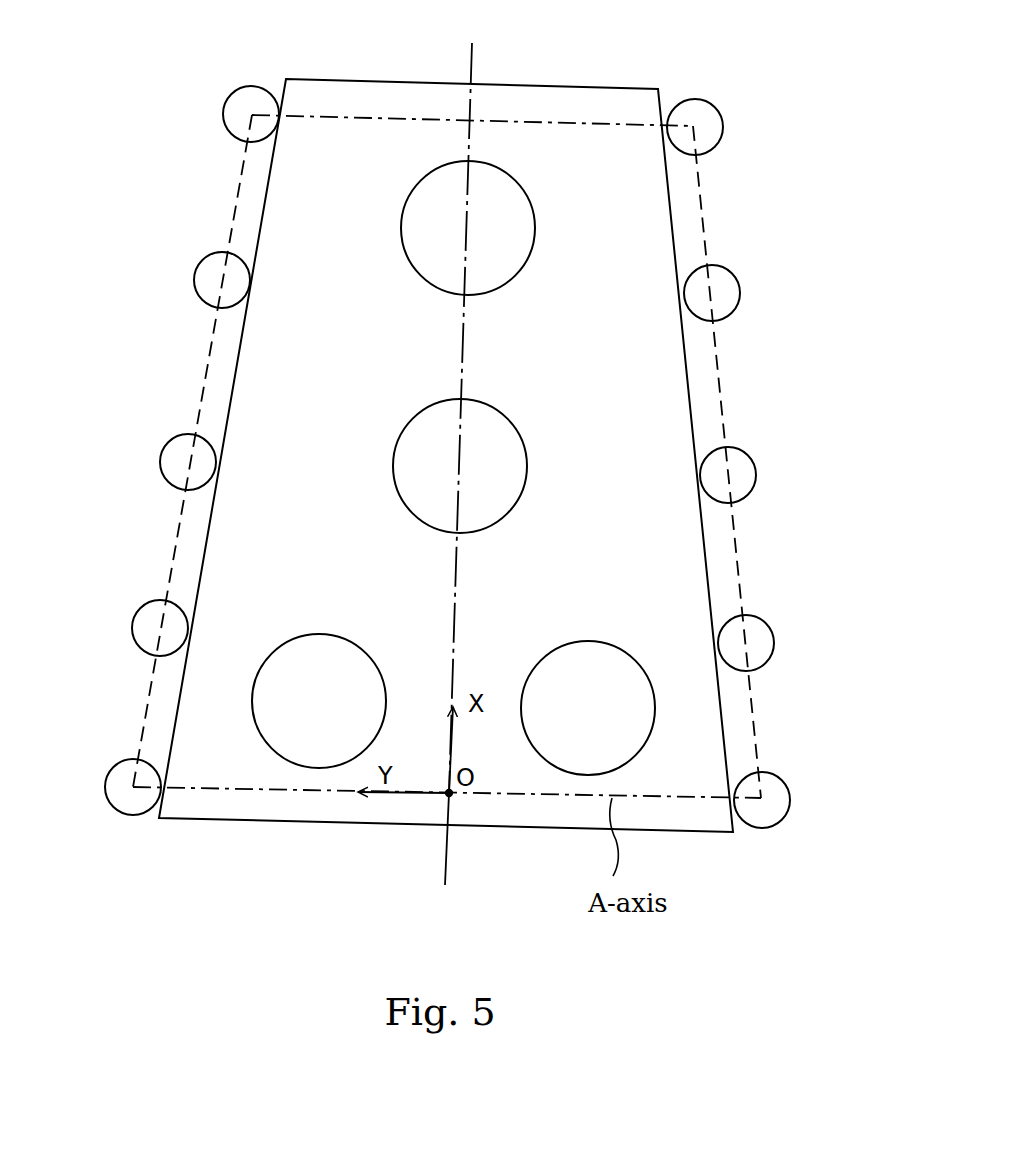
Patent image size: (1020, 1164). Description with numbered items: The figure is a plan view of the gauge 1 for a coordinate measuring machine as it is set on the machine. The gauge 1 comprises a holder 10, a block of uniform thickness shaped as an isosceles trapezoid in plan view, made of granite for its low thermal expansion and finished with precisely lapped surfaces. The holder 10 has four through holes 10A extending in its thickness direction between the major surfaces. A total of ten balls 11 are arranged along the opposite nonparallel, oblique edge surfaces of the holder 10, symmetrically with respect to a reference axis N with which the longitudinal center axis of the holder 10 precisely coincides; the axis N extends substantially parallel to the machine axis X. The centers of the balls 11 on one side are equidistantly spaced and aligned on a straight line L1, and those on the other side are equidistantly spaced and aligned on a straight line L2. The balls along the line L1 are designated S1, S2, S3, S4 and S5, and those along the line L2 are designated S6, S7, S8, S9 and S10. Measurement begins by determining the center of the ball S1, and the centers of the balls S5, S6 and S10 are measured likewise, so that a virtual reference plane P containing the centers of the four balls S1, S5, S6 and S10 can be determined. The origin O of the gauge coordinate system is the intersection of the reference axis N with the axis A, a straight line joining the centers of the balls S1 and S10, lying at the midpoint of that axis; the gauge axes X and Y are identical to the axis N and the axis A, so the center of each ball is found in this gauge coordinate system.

The gauge 1 is at (446, 418).
The holder 10 is at (368, 88).
The through holes 10A is at (534, 210).
The balls 11 is at (452, 457).
The virtual reference plane P is at (461, 456).
The straight line L1 is at (200, 387).
The straight line L2 is at (722, 390).
The reference axis N is at (465, 360).
The ball S1 is at (97, 787).
The ball S2 is at (125, 628).
The ball S3 is at (153, 462).
The ball S4 is at (187, 280).
The ball S5 is at (215, 114).
The ball S6 is at (731, 127).
The ball S7 is at (748, 293).
The ball S8 is at (762, 475).
The ball S9 is at (779, 643).
The ball S10 is at (802, 800).